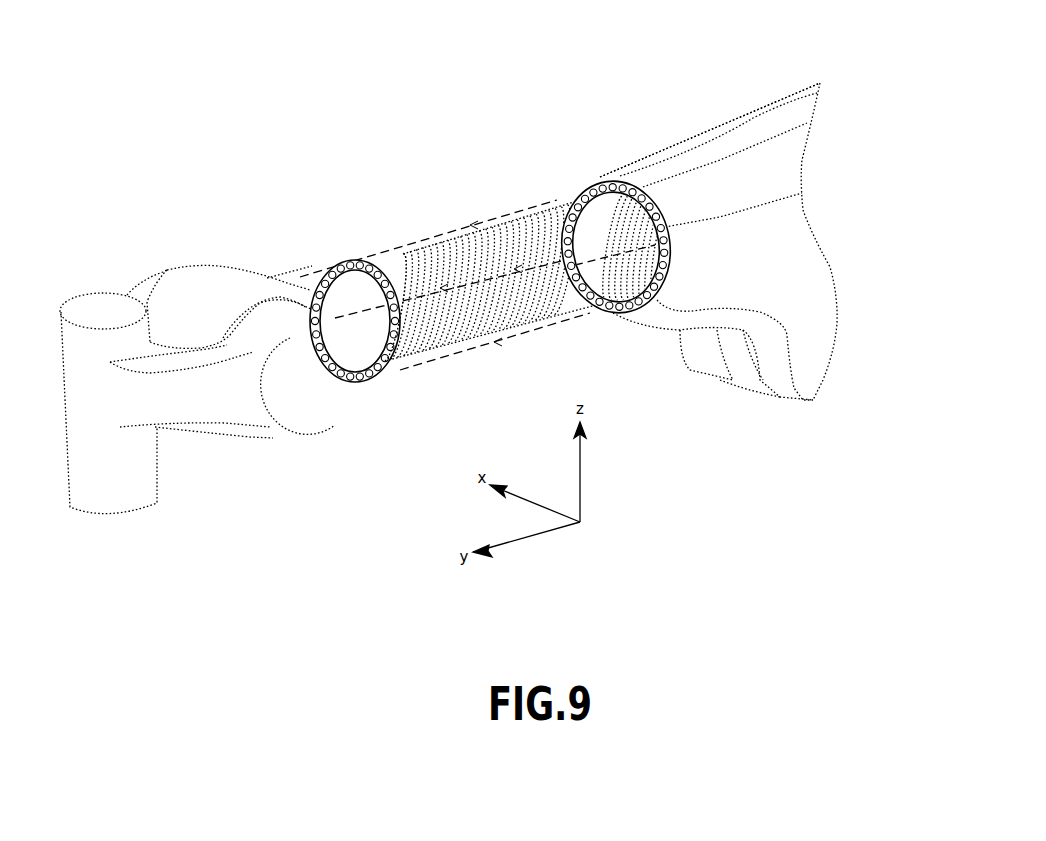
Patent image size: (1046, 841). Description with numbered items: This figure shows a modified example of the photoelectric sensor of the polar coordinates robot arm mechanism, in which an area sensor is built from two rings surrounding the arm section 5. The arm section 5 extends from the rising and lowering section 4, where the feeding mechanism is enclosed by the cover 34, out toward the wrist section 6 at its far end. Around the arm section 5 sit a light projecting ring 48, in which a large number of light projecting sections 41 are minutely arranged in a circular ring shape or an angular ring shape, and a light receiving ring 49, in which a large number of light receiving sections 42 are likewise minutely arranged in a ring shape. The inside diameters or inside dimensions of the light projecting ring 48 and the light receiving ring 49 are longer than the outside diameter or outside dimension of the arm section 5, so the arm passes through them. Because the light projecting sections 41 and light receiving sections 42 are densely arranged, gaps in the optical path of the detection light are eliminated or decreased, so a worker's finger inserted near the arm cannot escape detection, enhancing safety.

The rising and lowering section 4 is at (764, 90).
The arm section 5 is at (467, 190).
The wrist section 6 is at (243, 233).
The cover 34 is at (665, 140).
The light projecting section 41 is at (617, 308).
The light receiving section 42 is at (390, 375).
The light projecting ring 48 is at (585, 184).
The light receiving ring 49 is at (348, 261).